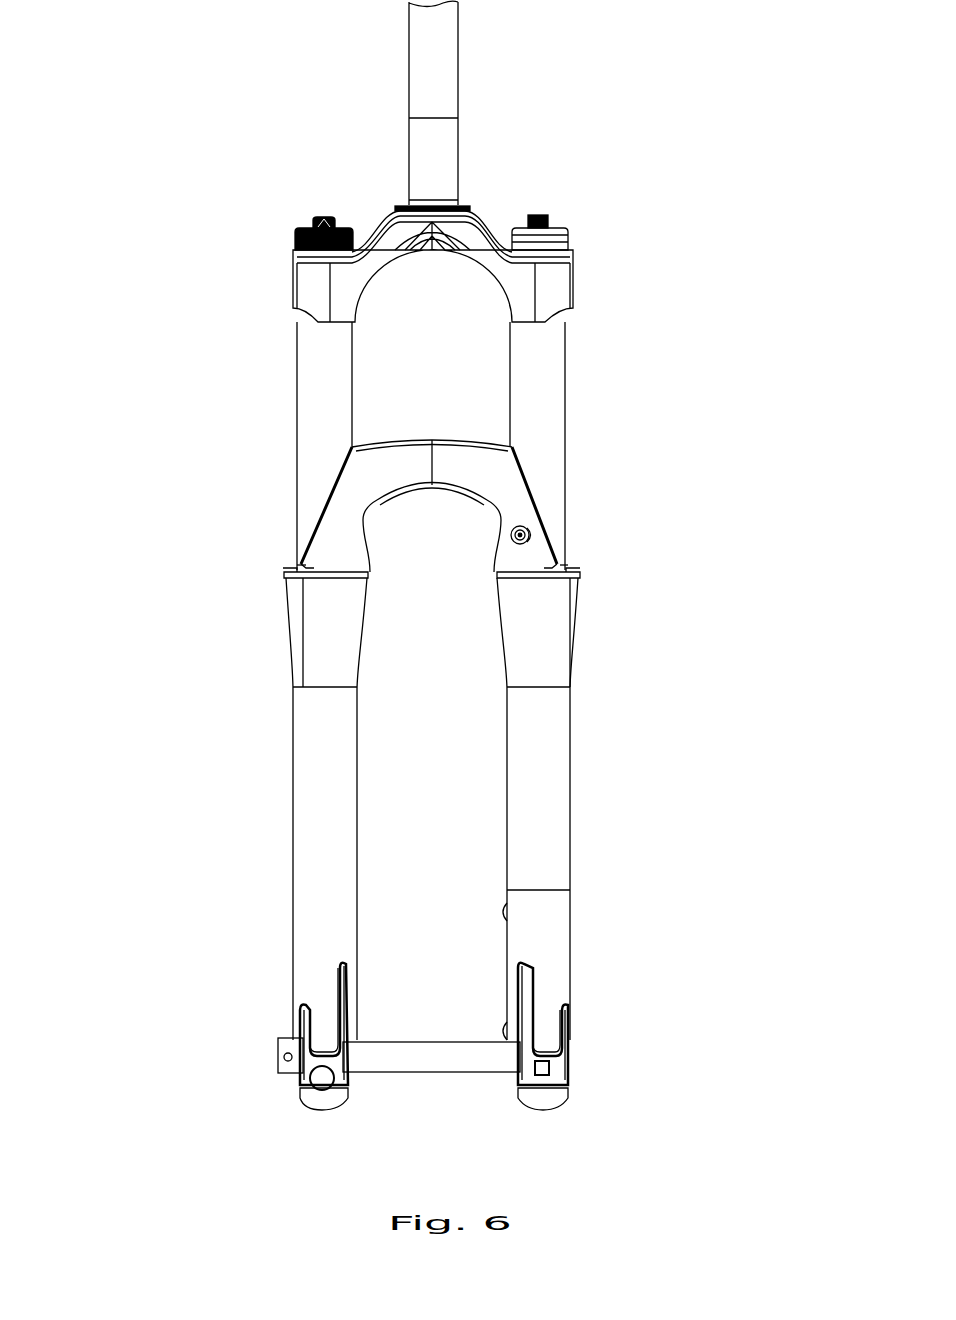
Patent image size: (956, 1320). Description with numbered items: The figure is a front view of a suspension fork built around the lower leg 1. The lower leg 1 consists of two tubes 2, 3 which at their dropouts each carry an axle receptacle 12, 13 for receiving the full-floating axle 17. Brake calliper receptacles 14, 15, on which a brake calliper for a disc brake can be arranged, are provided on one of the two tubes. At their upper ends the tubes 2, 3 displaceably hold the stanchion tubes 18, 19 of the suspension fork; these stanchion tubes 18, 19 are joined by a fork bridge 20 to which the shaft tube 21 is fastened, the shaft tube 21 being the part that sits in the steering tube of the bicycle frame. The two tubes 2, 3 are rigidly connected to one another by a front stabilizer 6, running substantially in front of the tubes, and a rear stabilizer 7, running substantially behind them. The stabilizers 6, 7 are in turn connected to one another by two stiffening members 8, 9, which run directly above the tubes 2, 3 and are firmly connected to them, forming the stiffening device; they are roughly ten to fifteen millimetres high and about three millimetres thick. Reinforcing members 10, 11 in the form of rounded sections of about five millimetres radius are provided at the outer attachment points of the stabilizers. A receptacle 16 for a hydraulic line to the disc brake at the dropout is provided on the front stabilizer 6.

The lower leg 1 is at (258, 658).
The tube 2 is at (312, 828).
The tube 3 is at (560, 770).
The front stabilizer 6 is at (410, 457).
The rear stabilizer 7 is at (423, 487).
The stiffening member 8 is at (368, 560).
The stiffening member 9 is at (497, 562).
The reinforcing member 10 is at (297, 565).
The reinforcing member 11 is at (568, 560).
The axle receptacle 12 is at (300, 1022).
The axle receptacle 13 is at (555, 1022).
The brake calliper receptacle 14 is at (503, 913).
The brake calliper receptacle 15 is at (503, 1030).
The receptacle for adjusting device 16 is at (510, 535).
The full-floating axle 17 is at (407, 1053).
The stanchion tube 18 is at (318, 367).
The stanchion tube 19 is at (540, 355).
The fork bridge 20 is at (480, 240).
The shaft tube 21 is at (438, 83).